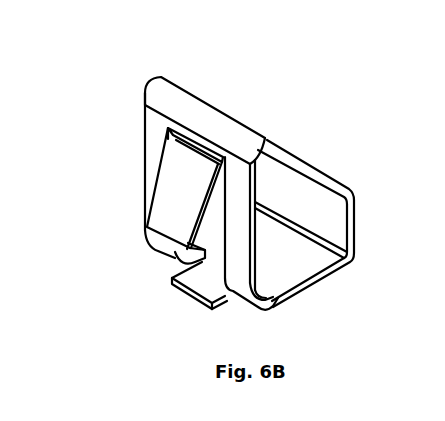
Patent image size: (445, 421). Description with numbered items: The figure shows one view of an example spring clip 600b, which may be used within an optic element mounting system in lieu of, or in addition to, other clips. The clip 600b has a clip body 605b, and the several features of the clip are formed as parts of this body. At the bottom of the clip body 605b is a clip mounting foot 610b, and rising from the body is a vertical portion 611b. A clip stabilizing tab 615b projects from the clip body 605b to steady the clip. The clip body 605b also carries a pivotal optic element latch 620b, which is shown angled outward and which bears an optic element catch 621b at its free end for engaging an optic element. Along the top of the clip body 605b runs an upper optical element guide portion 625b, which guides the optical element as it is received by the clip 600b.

The clip 600b is at (336, 117).
The clip body 605b is at (152, 152).
The clip mounting foot 610b is at (287, 265).
The vertical portion 611b is at (317, 212).
The clip stabilizing tab 615b is at (212, 275).
The pivotal optic element latch 620b is at (177, 208).
The optic element catch 621b is at (180, 259).
The upper optical element guide portion 625b is at (204, 117).